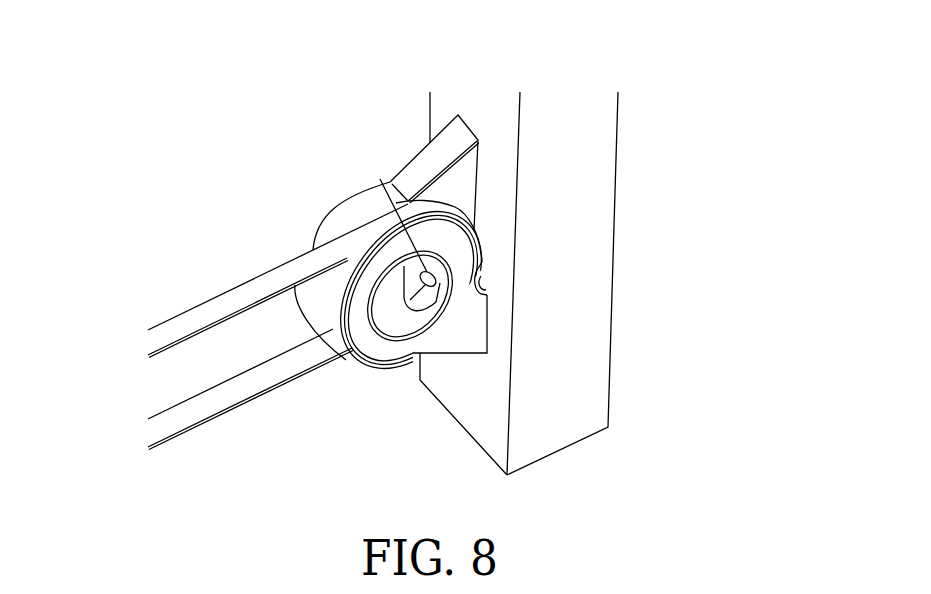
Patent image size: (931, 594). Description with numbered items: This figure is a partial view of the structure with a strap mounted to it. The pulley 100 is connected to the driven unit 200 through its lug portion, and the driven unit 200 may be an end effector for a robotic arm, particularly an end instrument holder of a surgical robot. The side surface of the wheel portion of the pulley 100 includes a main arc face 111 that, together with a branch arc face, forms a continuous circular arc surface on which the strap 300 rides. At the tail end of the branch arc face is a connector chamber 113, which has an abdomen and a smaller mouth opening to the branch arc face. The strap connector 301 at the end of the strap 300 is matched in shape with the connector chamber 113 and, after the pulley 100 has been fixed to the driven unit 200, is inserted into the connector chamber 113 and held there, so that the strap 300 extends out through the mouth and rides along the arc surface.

The pulley 100 is at (391, 183).
The main arc face 111 is at (320, 308).
The connector chamber 113 is at (633, 290).
The driven unit 200 is at (498, 251).
The strap 300 is at (255, 285).
The strap connector 301 is at (490, 283).